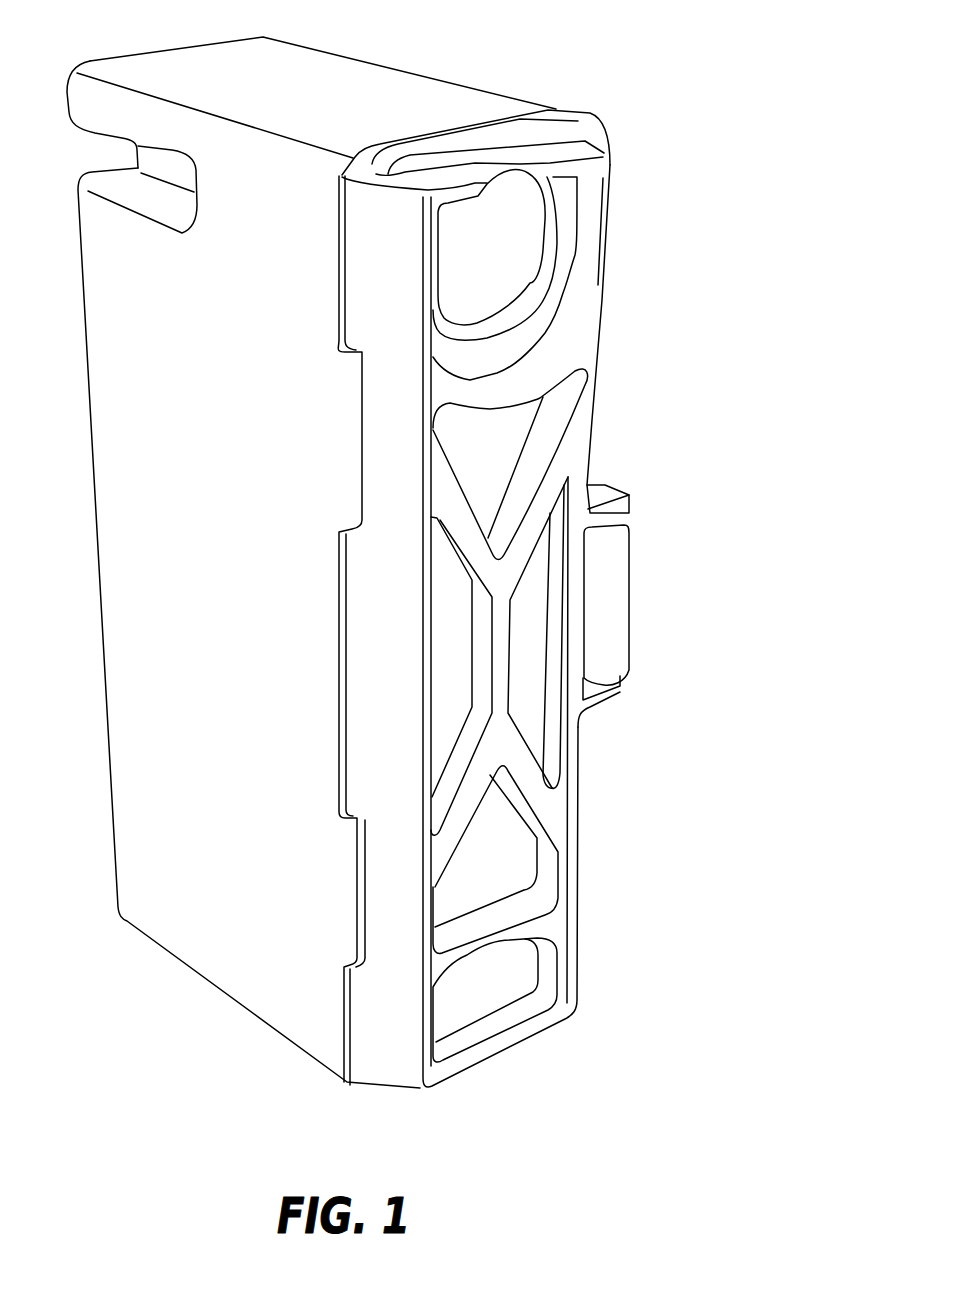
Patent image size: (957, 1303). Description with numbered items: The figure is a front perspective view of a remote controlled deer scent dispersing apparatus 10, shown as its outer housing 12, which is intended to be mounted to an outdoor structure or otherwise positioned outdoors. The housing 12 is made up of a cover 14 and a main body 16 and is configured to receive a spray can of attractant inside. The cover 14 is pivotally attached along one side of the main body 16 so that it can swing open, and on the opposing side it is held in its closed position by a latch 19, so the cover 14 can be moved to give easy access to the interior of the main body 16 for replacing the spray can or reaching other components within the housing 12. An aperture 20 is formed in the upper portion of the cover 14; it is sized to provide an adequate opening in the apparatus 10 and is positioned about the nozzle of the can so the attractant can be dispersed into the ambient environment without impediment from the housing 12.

The remote controlled deer scent dispersing apparatus 10 is at (410, 561).
The housing 12 is at (199, 971).
The cover 14 is at (570, 833).
The main body 16 is at (469, 98).
The latch 19 is at (613, 621).
The aperture 20 is at (500, 267).